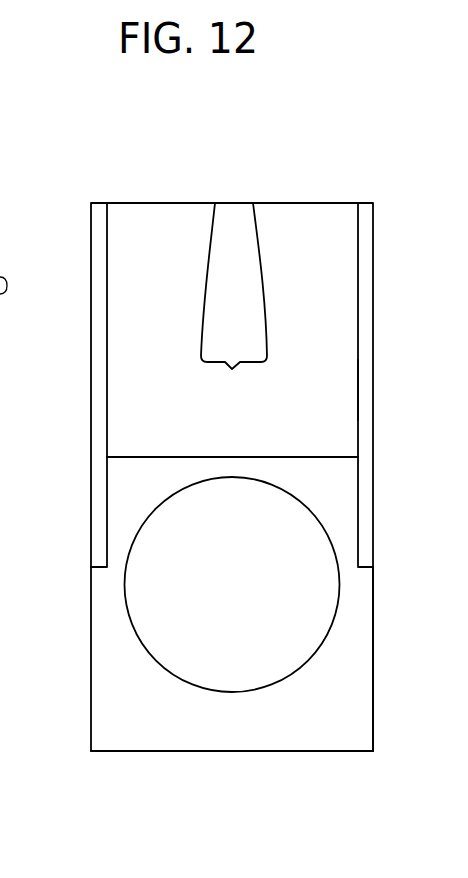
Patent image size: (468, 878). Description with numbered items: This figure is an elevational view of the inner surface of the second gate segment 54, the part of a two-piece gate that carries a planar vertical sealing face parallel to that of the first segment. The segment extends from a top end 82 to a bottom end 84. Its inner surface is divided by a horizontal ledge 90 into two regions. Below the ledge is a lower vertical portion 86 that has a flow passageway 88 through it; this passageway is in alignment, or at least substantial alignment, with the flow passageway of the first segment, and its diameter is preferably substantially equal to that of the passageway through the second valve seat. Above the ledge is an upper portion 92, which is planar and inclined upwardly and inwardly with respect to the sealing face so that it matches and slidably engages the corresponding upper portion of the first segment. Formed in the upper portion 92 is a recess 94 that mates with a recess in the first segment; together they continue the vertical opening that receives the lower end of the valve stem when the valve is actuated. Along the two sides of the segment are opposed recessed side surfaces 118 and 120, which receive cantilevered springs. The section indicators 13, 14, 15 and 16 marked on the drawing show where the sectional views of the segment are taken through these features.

The support arm 54 is at (249, 173).
The plate housing 82 is at (278, 203).
The bottom edge 84 is at (261, 752).
The lower plate portion 86 is at (309, 708).
The circular aperture 88 is at (220, 690).
The shelf / cross rib 90 is at (158, 458).
The right side rail 92 is at (328, 305).
The tab 94 is at (248, 306).
The rail notch 118 is at (358, 380).
The left side rail 120 is at (102, 393).
The section line 13- 13 is at (87, 65).
The section line 14- 14 is at (425, 115).
The section line 15- 15 is at (108, 186).
The section line 16- 16 is at (82, 759).